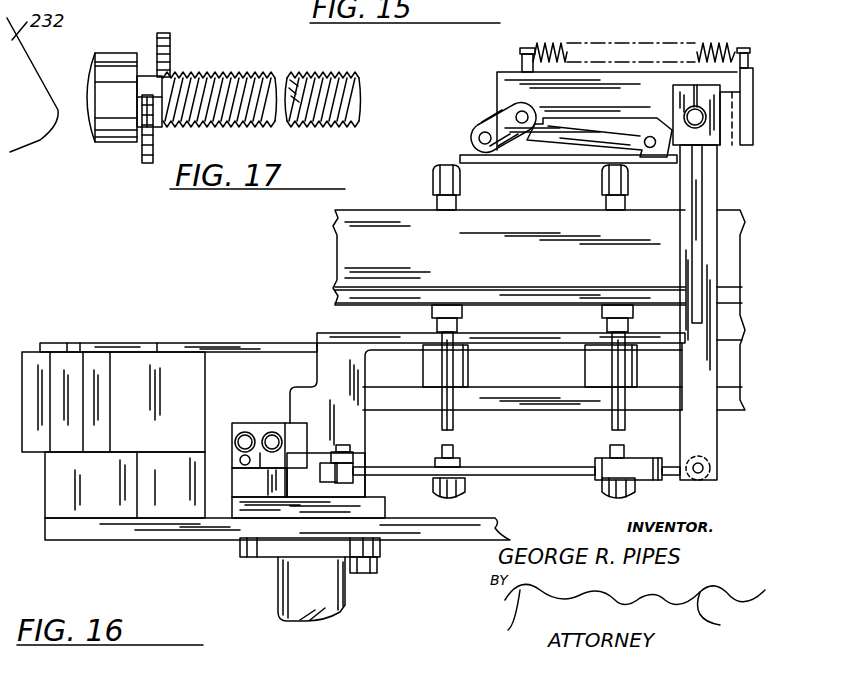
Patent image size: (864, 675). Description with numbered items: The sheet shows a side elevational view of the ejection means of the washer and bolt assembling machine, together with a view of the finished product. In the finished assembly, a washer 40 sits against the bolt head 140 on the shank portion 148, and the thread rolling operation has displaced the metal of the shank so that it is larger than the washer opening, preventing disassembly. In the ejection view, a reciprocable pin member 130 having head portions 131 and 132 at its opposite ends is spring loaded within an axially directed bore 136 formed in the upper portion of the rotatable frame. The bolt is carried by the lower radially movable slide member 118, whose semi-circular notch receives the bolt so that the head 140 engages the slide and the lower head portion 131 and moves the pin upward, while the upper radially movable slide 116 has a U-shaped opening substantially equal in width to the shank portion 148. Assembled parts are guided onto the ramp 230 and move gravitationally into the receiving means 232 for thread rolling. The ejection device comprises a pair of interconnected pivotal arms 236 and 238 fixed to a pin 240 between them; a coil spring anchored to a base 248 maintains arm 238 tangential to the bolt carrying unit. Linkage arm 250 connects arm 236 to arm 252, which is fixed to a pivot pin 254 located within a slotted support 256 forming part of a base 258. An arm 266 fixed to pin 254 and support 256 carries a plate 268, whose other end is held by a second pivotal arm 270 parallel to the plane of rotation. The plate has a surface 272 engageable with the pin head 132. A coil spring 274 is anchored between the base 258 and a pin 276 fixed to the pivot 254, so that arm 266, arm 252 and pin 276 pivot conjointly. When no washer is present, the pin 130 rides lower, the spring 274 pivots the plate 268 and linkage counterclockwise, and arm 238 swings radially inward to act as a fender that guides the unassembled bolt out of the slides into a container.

In FIG. 17, the washer 40 is at (143, 163).
In FIG. 17, the bolt head 140 is at (95, 143).
In FIG. 17, the shank portion 148 is at (203, 73).
In FIG. 16, the upper radially movable slide 116 is at (593, 337).
In FIG. 16, the lower radially movable slide member 118 is at (462, 370).
In FIG. 16, the reciprocable pin member 130 is at (617, 305).
In FIG. 16, the head portion 131 is at (633, 318).
In FIG. 16, the head portion 132 is at (436, 166).
In FIG. 16, the axially directed bore 136 is at (402, 215).
In FIG. 16, the ramp 230 is at (237, 343).
In FIG. 16, the receiving means 232 is at (28, 358).
In FIG. 16, the pivotal arm 236 is at (362, 448).
In FIG. 16, the pivotal arm 238 is at (340, 333).
In FIG. 16, the pin 240 is at (328, 368).
In FIG. 16, the base 248 is at (363, 511).
In FIG. 16, the linkage arm 250 is at (543, 440).
In FIG. 16, the arm 252 is at (695, 247).
In FIG. 16, the pivot pin 254 is at (685, 114).
In FIG. 16, the slotted support 256 is at (675, 83).
In FIG. 16, the base 258 is at (500, 75).
In FIG. 16, the arm 266 is at (660, 146).
In FIG. 16, the plate 268 is at (548, 157).
In FIG. 16, the second pivotal arm 270 is at (483, 117).
In FIG. 16, the surface 272 is at (585, 165).
In FIG. 16, the coil spring 274 is at (557, 45).
In FIG. 16, the pin 276 is at (735, 80).